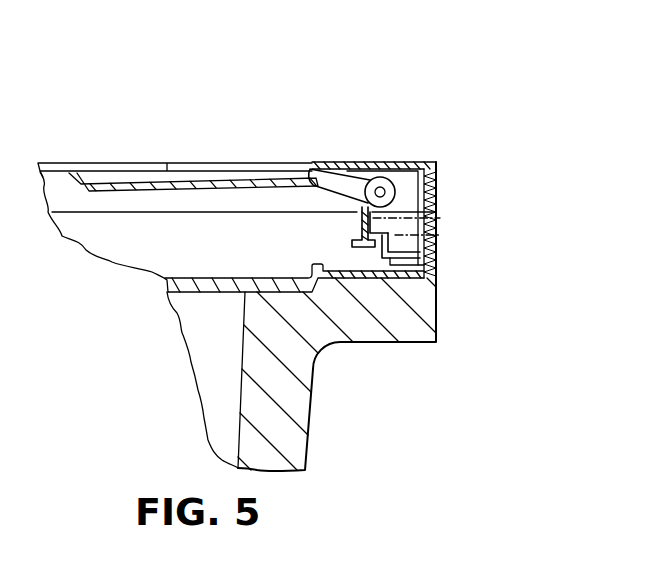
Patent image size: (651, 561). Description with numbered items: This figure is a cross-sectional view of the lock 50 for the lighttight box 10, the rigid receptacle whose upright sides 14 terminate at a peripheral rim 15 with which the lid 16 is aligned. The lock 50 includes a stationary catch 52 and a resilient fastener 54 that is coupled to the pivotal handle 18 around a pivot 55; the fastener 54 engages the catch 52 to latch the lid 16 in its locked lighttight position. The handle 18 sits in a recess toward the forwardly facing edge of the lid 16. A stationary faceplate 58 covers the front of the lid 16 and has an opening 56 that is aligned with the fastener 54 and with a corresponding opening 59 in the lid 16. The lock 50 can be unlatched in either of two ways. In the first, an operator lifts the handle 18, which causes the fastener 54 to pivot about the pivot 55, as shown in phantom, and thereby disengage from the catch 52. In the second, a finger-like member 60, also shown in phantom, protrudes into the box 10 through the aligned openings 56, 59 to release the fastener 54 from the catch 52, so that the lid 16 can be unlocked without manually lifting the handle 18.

The lighttight box 10 is at (320, 145).
The upright sides 14 is at (303, 393).
The peripheral rim 15 is at (437, 300).
The lid 16 is at (132, 162).
The pivotal handle 18 is at (223, 162).
The lock 50 is at (326, 219).
The stationary catch 52 is at (437, 252).
The resilient fastener 54 is at (355, 223).
The pivot 55 is at (378, 177).
The opening 56 is at (437, 227).
The stationary faceplate 58 is at (437, 182).
The opening in the lid 59 is at (437, 234).
The finger-like member 60 is at (381, 191).